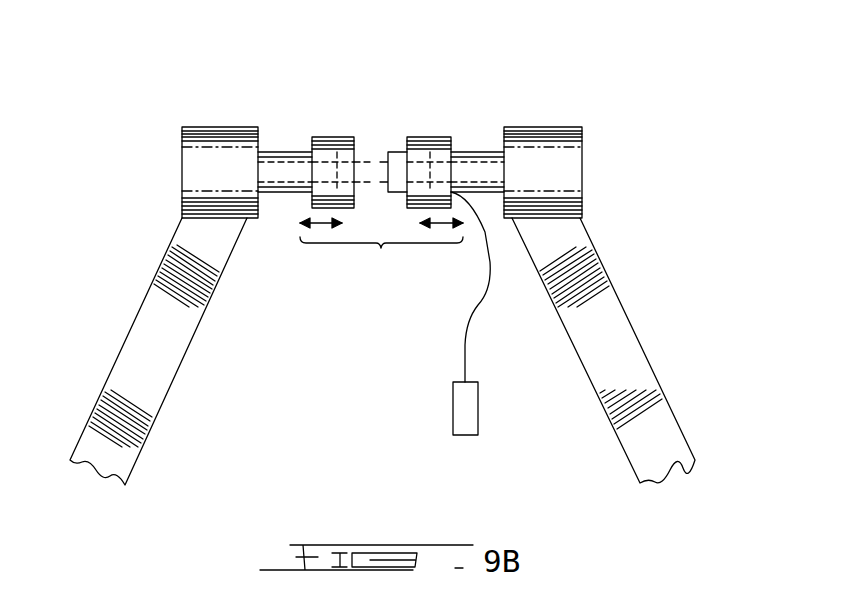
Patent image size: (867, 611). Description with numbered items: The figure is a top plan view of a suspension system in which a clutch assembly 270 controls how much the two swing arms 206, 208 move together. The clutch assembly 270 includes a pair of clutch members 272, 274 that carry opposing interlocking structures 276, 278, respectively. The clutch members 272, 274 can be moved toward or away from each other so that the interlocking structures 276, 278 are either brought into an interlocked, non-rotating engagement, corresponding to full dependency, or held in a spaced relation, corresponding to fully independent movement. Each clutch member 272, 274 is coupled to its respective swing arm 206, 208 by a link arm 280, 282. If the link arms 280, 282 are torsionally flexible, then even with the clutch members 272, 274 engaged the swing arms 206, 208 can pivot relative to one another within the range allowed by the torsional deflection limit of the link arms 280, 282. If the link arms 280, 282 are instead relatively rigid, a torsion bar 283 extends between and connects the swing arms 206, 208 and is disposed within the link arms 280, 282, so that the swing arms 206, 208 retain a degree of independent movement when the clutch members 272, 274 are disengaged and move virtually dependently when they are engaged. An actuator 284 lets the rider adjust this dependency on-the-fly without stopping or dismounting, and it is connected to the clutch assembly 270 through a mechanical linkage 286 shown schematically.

The swing arm 206 is at (162, 318).
The swing arm 208 is at (598, 298).
The clutch assembly 270 is at (381, 251).
The clutch member 272 is at (328, 137).
The clutch member 274 is at (430, 137).
The interlocking structure 276 is at (378, 160).
The interlocking structure 278 is at (386, 158).
The link arm 280 is at (276, 152).
The link arm 282 is at (477, 150).
The torsion bar 283 is at (278, 192).
The actuator 284 is at (473, 412).
The mechanical linkage 286 is at (480, 308).